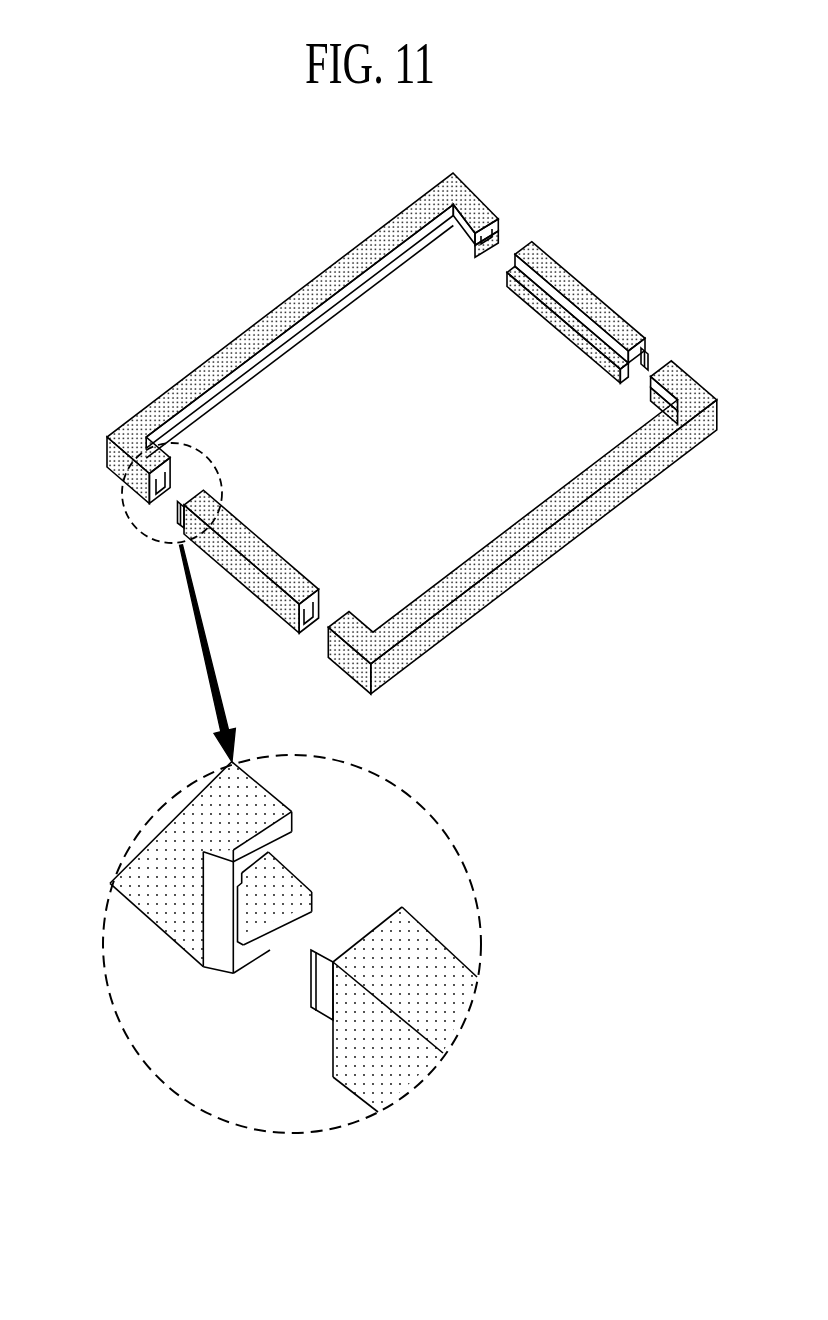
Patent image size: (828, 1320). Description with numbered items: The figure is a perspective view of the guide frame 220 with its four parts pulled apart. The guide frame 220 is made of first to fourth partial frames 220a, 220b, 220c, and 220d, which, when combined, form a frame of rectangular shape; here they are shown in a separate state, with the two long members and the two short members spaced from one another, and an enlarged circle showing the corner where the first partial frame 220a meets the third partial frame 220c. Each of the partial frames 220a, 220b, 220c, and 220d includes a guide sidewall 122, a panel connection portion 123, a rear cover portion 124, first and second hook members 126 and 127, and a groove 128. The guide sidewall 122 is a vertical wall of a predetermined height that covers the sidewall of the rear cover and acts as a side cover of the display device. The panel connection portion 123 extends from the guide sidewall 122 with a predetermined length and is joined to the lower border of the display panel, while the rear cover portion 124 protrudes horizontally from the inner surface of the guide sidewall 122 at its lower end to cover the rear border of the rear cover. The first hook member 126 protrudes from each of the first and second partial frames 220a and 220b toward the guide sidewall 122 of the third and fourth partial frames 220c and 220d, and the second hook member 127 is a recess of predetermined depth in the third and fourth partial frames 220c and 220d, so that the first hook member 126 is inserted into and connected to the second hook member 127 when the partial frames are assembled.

The guide frame 220 is at (157, 235).
The first partial frame 220a is at (292, 535).
The second partial frame 220b is at (622, 272).
The third partial frame 220c is at (294, 250).
The fourth partial frame 220d is at (578, 575).
The guide sidewall 122 is at (243, 913).
The panel connection portion 123 is at (293, 815).
The rear cover portion 124 is at (305, 890).
The first hook member 126 is at (321, 1006).
The second hook member 127 is at (240, 918).
The groove 128 is at (220, 952).